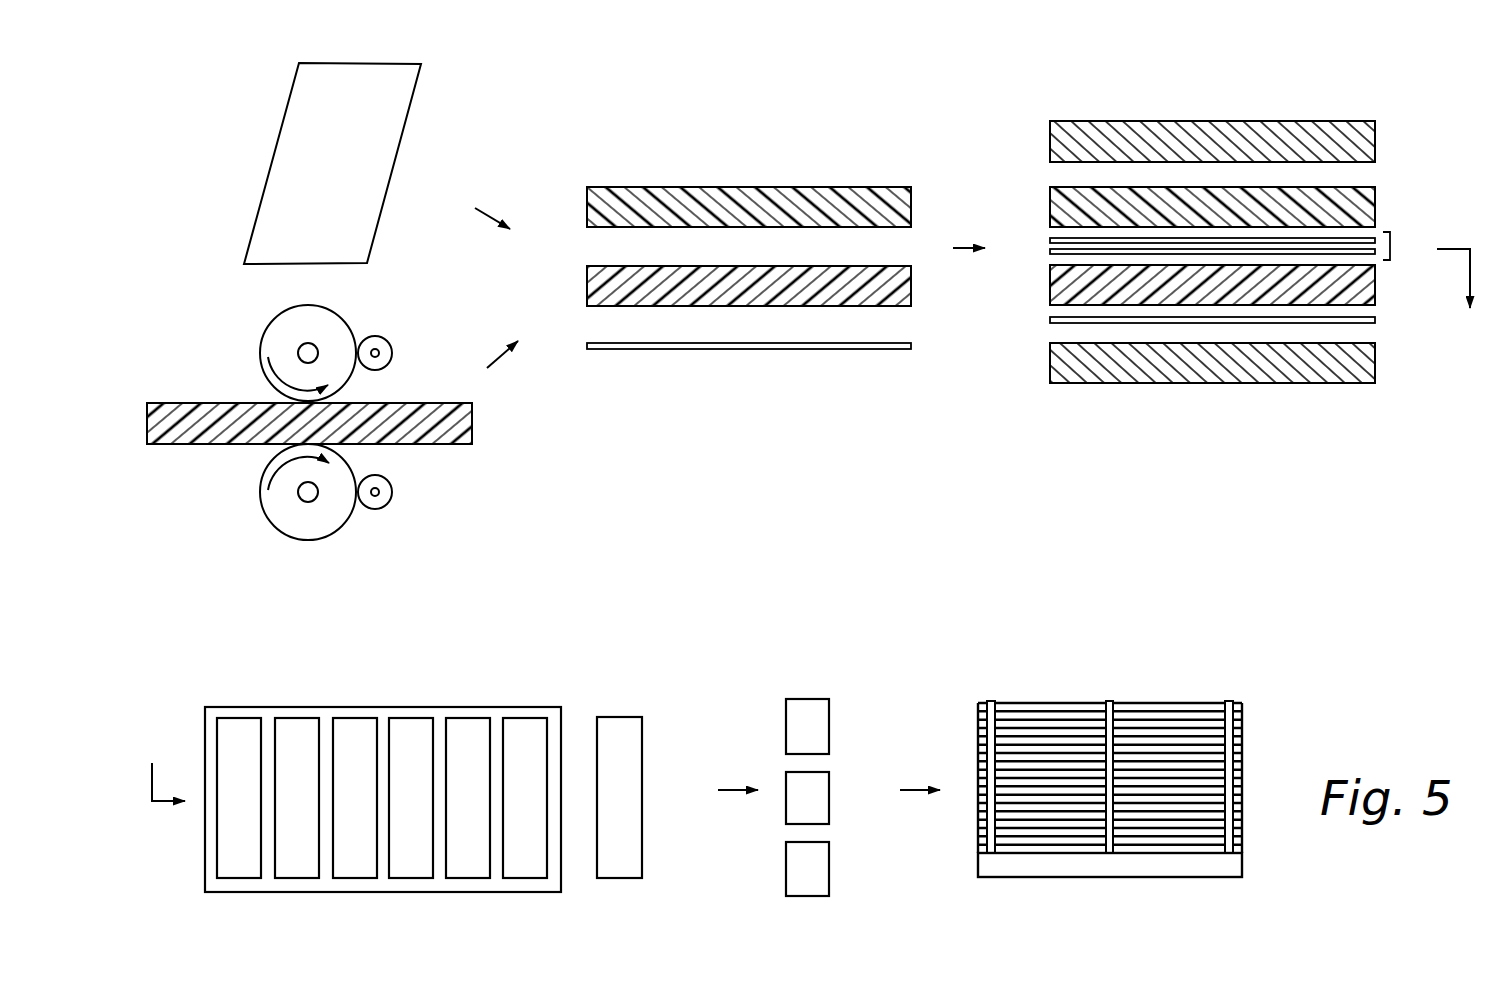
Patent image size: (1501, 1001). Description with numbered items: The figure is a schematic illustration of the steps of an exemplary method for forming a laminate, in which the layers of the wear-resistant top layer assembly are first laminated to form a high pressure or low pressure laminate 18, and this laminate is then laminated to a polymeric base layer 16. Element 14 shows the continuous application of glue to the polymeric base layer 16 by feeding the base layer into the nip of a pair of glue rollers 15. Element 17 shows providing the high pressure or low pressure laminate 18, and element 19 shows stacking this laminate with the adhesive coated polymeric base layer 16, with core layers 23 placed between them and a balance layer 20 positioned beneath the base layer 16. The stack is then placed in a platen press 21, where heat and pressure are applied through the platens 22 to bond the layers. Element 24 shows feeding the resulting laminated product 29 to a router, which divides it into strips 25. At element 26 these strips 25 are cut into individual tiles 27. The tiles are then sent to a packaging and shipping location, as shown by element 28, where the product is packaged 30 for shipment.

The glue application step 14 is at (470, 477).
The glue rollers 15 is at (282, 333).
The polymeric base layer 16 is at (233, 410).
The laminate providing step 17 is at (238, 186).
The high pressure or low pressure laminate 18 is at (302, 97).
The stacking step 19 is at (793, 372).
The balance layer 20 is at (862, 349).
The platen press 21 is at (1190, 415).
The platens 22 is at (1318, 120).
The core layers 23 is at (1393, 245).
The routing step 24 is at (383, 755).
The strips 25 is at (630, 808).
The cutting step 26 is at (821, 760).
The tiles 27 is at (817, 802).
The packaging and shipping step 28 is at (1110, 757).
The laminated product 29 is at (455, 708).
The packaged product 30 is at (1167, 732).